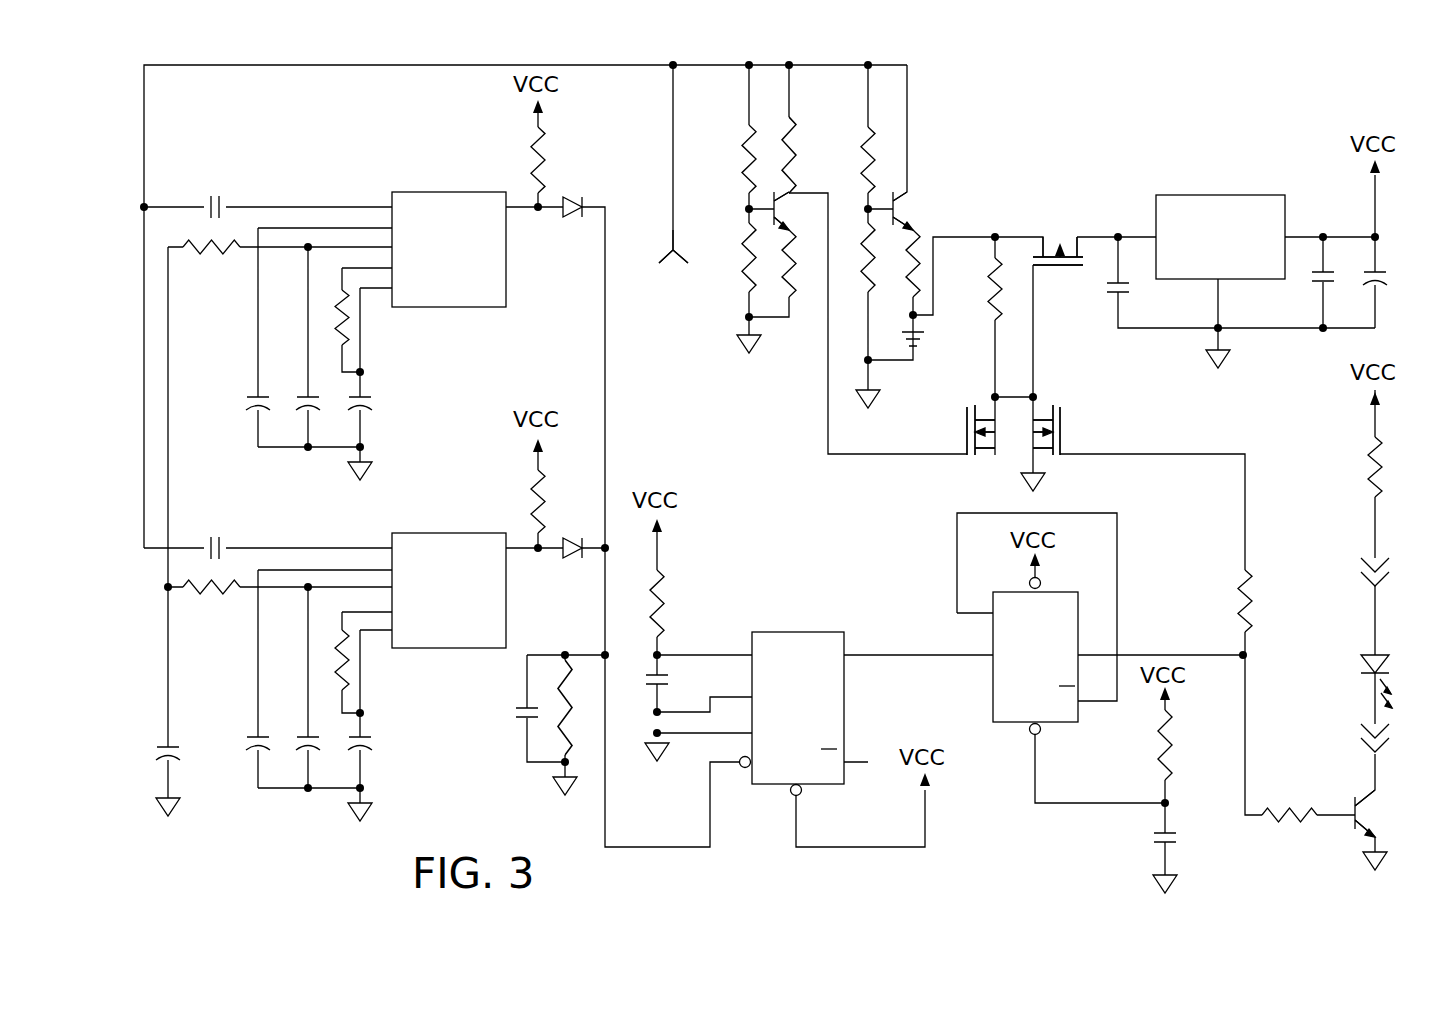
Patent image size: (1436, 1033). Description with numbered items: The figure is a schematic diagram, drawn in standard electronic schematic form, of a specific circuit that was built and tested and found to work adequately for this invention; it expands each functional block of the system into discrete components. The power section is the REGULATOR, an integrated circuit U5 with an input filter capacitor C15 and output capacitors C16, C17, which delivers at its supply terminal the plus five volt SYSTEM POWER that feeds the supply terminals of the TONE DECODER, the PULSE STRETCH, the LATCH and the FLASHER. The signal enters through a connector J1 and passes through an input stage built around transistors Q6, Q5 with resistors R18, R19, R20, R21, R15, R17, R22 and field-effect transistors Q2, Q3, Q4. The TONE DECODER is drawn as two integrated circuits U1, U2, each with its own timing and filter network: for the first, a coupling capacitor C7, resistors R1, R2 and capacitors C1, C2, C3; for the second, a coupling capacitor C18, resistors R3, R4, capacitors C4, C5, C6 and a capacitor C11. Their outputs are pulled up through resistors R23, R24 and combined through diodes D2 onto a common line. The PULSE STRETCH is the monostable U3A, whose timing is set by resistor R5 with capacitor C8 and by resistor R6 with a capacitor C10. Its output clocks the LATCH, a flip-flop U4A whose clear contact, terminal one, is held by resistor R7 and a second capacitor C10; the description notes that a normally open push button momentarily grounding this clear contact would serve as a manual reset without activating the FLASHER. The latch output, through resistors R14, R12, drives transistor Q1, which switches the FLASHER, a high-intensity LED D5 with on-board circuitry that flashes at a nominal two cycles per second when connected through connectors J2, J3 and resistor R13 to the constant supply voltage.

The capacitor C7 is at (212, 188).
The capacitor C18 is at (214, 529).
The integrated circuit U1 is at (449, 236).
The integrated circuit U2 is at (449, 577).
The resistor R1 is at (211, 263).
The resistor R2 is at (346, 338).
The resistor R3 is at (211, 603).
The resistor R4 is at (346, 680).
The capacitor C1 is at (239, 386).
The capacitor C2 is at (294, 386).
The capacitor C3 is at (382, 402).
The capacitor C4 is at (239, 726).
The capacitor C5 is at (294, 726).
The capacitor C6 is at (382, 744).
The capacitor C11 is at (194, 769).
The resistor R23 is at (563, 167).
The resistor R24 is at (511, 509).
The diode D2 is at (573, 396).
The capacitor C8 is at (503, 712).
The resistor R5 is at (561, 692).
The resistor R6 is at (677, 612).
The capacitor C10 is at (937, 765).
The monostable multivibrator U3A is at (792, 699).
The D flip-flop U4A is at (1045, 651).
The resistor R7 is at (1145, 756).
The resistor R14 is at (1269, 601).
The resistor R12 is at (1289, 801).
The resistor R13 is at (1400, 467).
The connector J2 is at (1389, 571).
The connector J3 is at (1389, 738).
The light emitting diode D5 is at (1392, 672).
The transistor Q1 is at (1383, 813).
The connector J1 is at (673, 263).
The resistor R18 is at (724, 155).
The resistor R19 is at (724, 253).
The resistor R20 is at (811, 140).
The transistor Q6 is at (798, 211).
The resistor R21 is at (798, 299).
The resistor R15 is at (871, 150).
The transistor Q5 is at (900, 216).
The resistor R17 is at (918, 248).
The resistor R22 is at (972, 289).
The MOSFET transistor Q2 is at (1058, 235).
The MOSFET transistor Q3 is at (960, 430).
The MOSFET transistor Q4 is at (1066, 430).
The voltage regulator U5 is at (1219, 222).
The capacitor C15 is at (1139, 304).
The capacitor C16 is at (1303, 293).
The capacitor C17 is at (1397, 265).